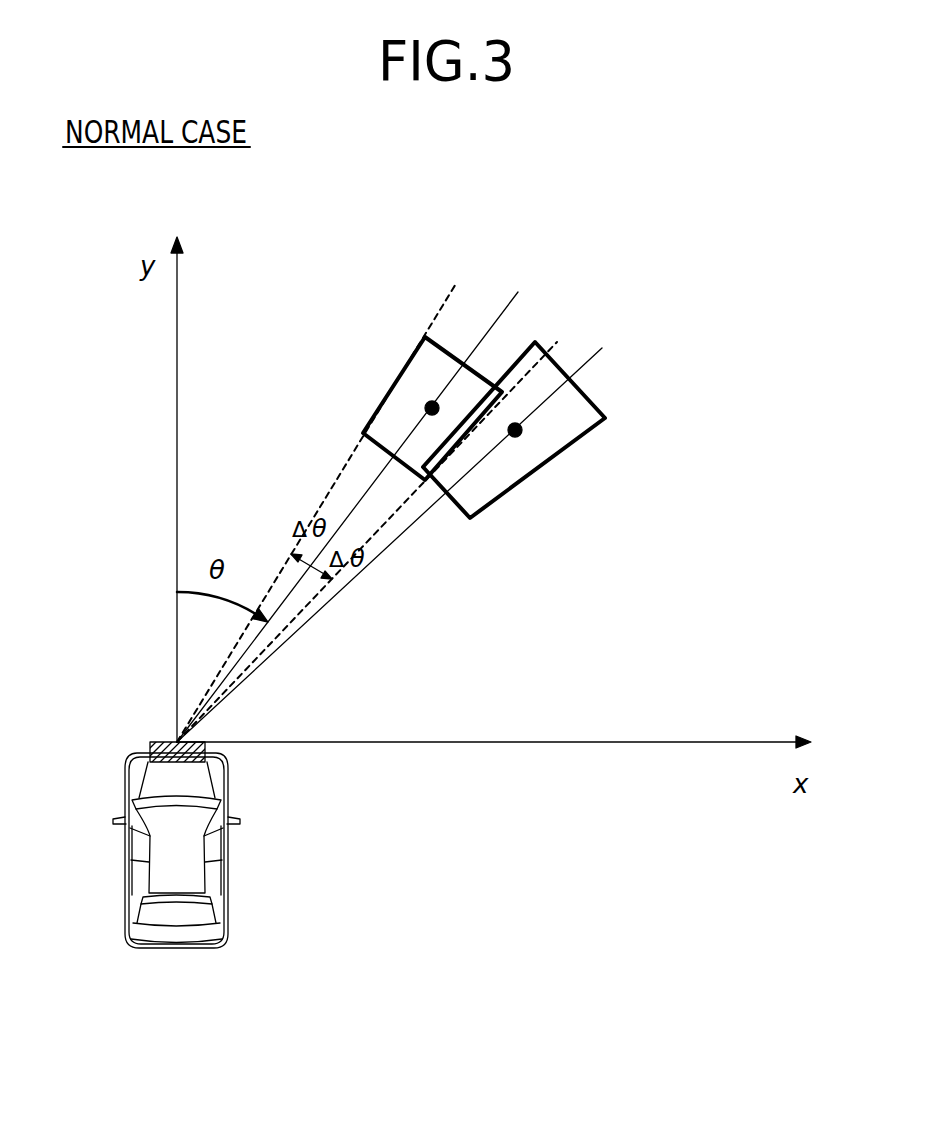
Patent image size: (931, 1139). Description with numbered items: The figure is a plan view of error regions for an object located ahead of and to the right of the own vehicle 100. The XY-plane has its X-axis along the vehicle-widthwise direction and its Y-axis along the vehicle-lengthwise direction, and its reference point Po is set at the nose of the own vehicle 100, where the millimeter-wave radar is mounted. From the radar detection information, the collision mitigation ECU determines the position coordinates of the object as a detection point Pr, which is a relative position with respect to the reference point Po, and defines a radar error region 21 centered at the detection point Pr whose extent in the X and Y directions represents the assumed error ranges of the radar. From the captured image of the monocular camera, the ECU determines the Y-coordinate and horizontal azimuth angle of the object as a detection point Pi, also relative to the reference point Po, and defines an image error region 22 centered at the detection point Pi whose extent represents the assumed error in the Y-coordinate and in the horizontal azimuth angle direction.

The radar error region 21 is at (402, 398).
The image error region 22 is at (522, 465).
The vehicle 100 is at (228, 790).
The reference point Po is at (176, 740).
The detection point Pr is at (435, 401).
The detection point Pi is at (522, 430).